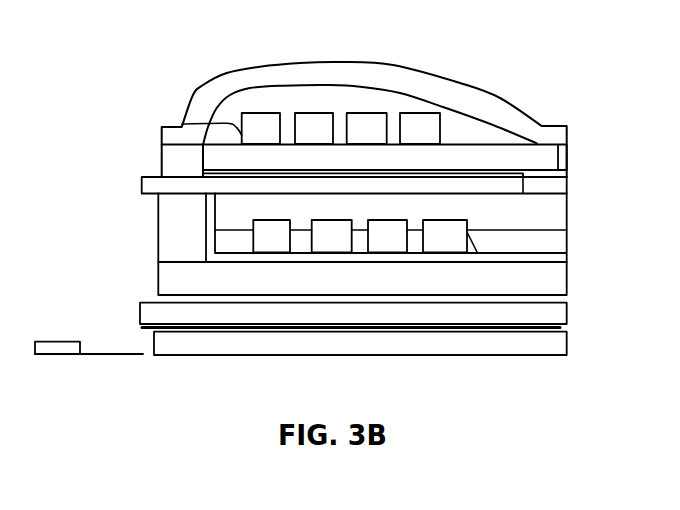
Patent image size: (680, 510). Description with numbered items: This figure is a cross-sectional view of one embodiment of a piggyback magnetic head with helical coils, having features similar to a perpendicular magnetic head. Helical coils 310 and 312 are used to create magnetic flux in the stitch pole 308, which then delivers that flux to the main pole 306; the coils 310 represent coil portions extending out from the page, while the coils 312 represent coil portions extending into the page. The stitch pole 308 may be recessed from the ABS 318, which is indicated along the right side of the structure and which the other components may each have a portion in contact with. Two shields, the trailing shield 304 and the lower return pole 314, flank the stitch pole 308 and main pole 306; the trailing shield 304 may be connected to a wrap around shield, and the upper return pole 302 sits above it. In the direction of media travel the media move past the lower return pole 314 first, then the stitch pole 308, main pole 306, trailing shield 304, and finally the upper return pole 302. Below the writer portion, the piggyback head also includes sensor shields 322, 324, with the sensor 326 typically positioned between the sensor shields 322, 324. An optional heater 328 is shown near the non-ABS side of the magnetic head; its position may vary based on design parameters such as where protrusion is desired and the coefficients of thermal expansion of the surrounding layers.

The upper return pole 302 is at (500, 95).
The trailing shield 304 is at (568, 158).
The main pole 306 is at (568, 185).
The stitch pole 308 is at (513, 194).
The helical coils 310 is at (182, 125).
The helical coils 312 is at (253, 218).
The lower return pole 314 is at (401, 288).
The ABS 318 is at (569, 267).
The sensor shield 322 is at (140, 317).
The sensor shield 324 is at (153, 340).
The sensor 326 is at (557, 327).
The heater 328 is at (65, 340).